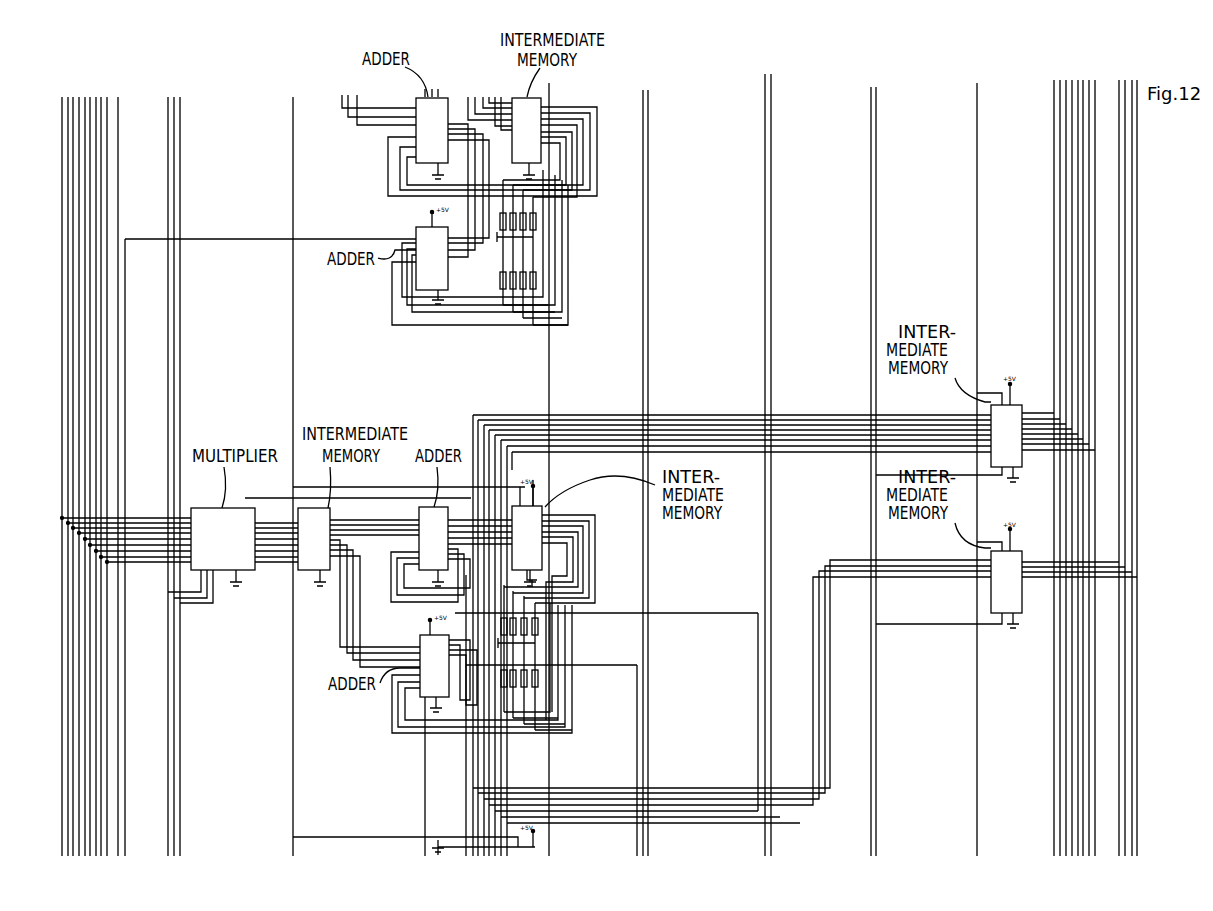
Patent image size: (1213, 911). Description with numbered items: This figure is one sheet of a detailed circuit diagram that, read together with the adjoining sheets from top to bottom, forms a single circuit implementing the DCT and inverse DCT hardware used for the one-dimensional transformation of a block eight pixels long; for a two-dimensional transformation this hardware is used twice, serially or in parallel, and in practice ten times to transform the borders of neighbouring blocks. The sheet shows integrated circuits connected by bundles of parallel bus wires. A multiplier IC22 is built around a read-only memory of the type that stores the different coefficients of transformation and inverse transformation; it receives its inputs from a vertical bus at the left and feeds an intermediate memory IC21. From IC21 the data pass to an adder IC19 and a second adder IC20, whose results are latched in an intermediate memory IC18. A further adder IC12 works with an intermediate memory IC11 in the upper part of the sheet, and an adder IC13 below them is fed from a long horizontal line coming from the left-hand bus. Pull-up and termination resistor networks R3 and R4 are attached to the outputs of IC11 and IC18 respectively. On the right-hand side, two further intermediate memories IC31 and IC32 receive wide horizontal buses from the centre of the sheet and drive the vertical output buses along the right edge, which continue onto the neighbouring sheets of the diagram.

The intermediate memory IC11 is at (551, 92).
The adder IC12 is at (416, 130).
The adder IC13 is at (416, 257).
The intermediate memory IC18 is at (545, 538).
The adder IC19 is at (418, 538).
The adder IC20 is at (419, 663).
The intermediate memory IC21 is at (329, 538).
The multiplier IC22 is at (223, 532).
The intermediate memory IC31 is at (1043, 429).
The intermediate memory IC32 is at (1064, 579).
The resistor network R3 is at (516, 252).
The resistor network R4 is at (518, 657).